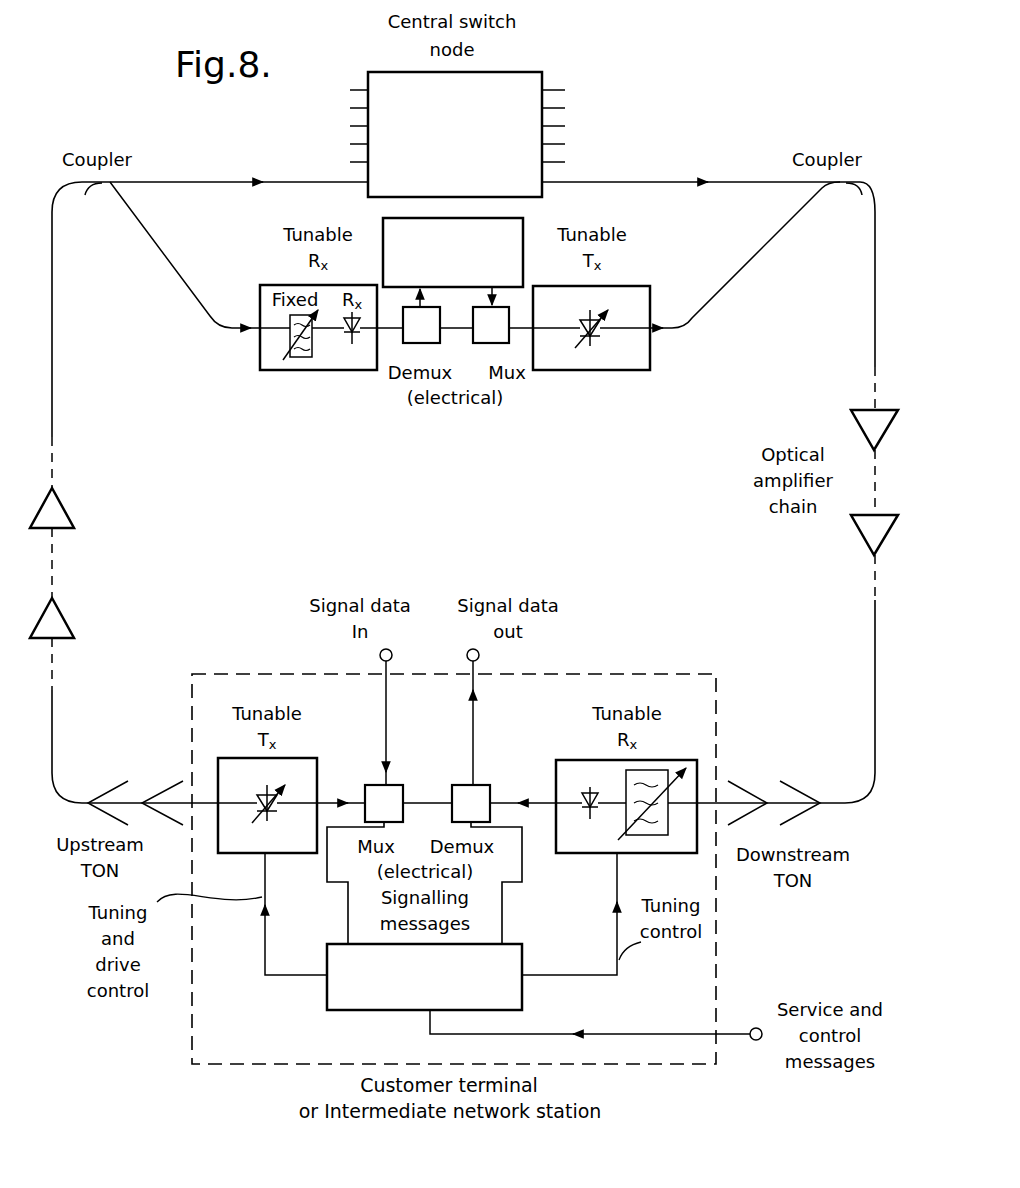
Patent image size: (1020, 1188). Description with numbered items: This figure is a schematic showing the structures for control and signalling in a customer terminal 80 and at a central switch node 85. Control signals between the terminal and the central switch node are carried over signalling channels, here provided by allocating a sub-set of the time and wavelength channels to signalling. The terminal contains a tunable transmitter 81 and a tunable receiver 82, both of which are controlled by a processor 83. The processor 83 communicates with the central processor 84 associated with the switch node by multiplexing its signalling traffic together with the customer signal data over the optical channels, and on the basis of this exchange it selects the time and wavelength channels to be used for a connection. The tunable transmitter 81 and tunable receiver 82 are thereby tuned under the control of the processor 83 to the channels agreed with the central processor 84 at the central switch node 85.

The customer terminal or intermediate network station 80 is at (706, 1066).
The tunable transmitter 81 is at (246, 856).
The tunable receiver 82 is at (584, 858).
The processor 83 is at (335, 996).
The central processor 84 is at (386, 221).
The central switch node 85 is at (537, 78).